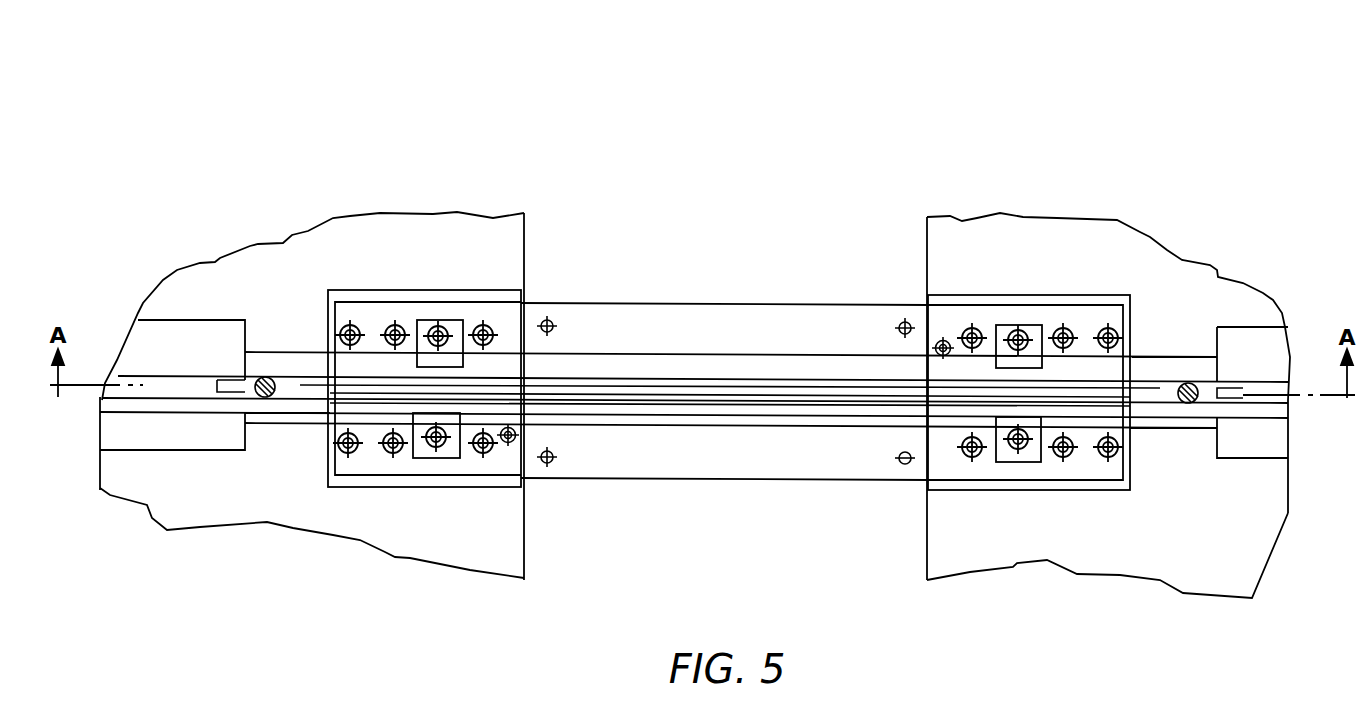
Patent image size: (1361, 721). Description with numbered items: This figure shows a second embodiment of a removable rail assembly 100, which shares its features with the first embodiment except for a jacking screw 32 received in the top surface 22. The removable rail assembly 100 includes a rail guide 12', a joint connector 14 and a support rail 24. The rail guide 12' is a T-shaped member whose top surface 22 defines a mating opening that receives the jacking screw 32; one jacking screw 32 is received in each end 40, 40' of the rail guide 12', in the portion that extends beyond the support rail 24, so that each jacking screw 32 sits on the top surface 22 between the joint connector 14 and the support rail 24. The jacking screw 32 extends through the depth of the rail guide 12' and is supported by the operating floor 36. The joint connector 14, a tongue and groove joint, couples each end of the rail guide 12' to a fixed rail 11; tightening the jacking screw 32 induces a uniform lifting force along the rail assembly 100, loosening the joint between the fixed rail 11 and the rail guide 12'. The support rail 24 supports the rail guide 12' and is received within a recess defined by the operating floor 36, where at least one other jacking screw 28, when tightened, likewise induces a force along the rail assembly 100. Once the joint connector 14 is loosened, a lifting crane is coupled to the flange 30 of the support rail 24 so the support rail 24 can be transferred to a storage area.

The removable rail assembly 100 is at (688, 134).
The fixed rail 11 is at (142, 442).
The rail guide 12' is at (730, 322).
The joint connector 14 is at (1228, 393).
The top surface 22 is at (667, 407).
The support rail 24 is at (753, 478).
The jacking screw 28 is at (436, 320).
The flange 30 is at (505, 290).
The jacking screw 32 is at (265, 377).
The operating floor 36 is at (485, 548).
The end of the rail guide 40 is at (1173, 294).
The end of the rail guide 40' is at (266, 489).